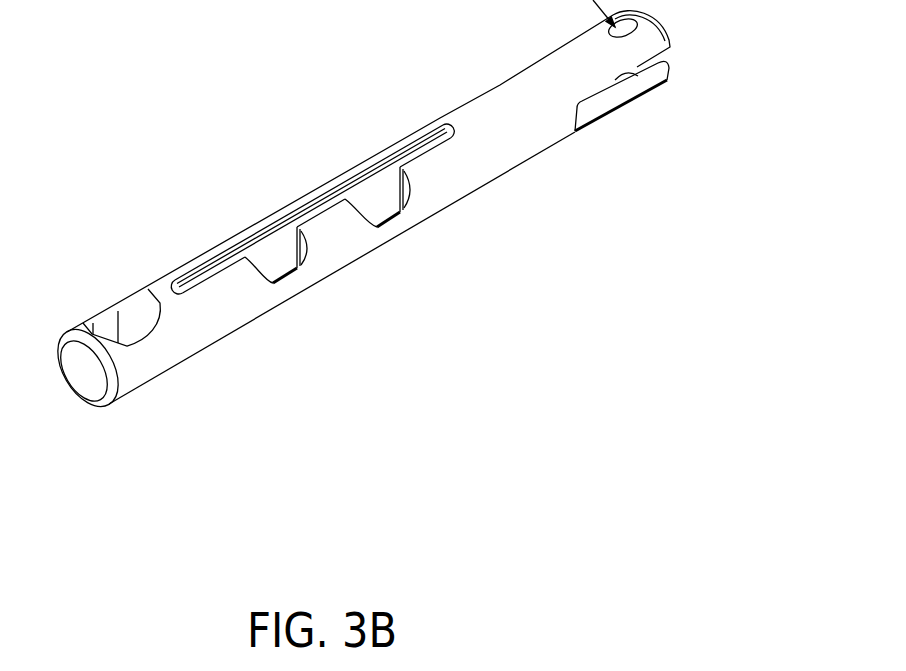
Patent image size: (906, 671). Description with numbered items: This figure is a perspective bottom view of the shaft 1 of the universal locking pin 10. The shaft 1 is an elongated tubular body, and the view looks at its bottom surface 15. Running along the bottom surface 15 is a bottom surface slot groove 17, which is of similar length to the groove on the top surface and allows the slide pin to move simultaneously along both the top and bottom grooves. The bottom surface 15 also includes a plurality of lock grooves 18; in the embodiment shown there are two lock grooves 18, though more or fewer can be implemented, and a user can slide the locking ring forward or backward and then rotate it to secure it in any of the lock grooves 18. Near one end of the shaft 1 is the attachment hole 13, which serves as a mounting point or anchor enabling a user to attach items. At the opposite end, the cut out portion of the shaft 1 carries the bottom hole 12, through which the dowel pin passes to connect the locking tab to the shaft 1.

The universal locking pin 10 is at (278, 140).
The shaft 1 is at (542, 155).
The bottom surface 15 is at (529, 139).
The bottom surface slot groove 17 is at (187, 273).
The lock grooves 18 is at (390, 225).
The attachment hole 13 is at (147, 332).
The bottom hole 12 is at (633, 78).